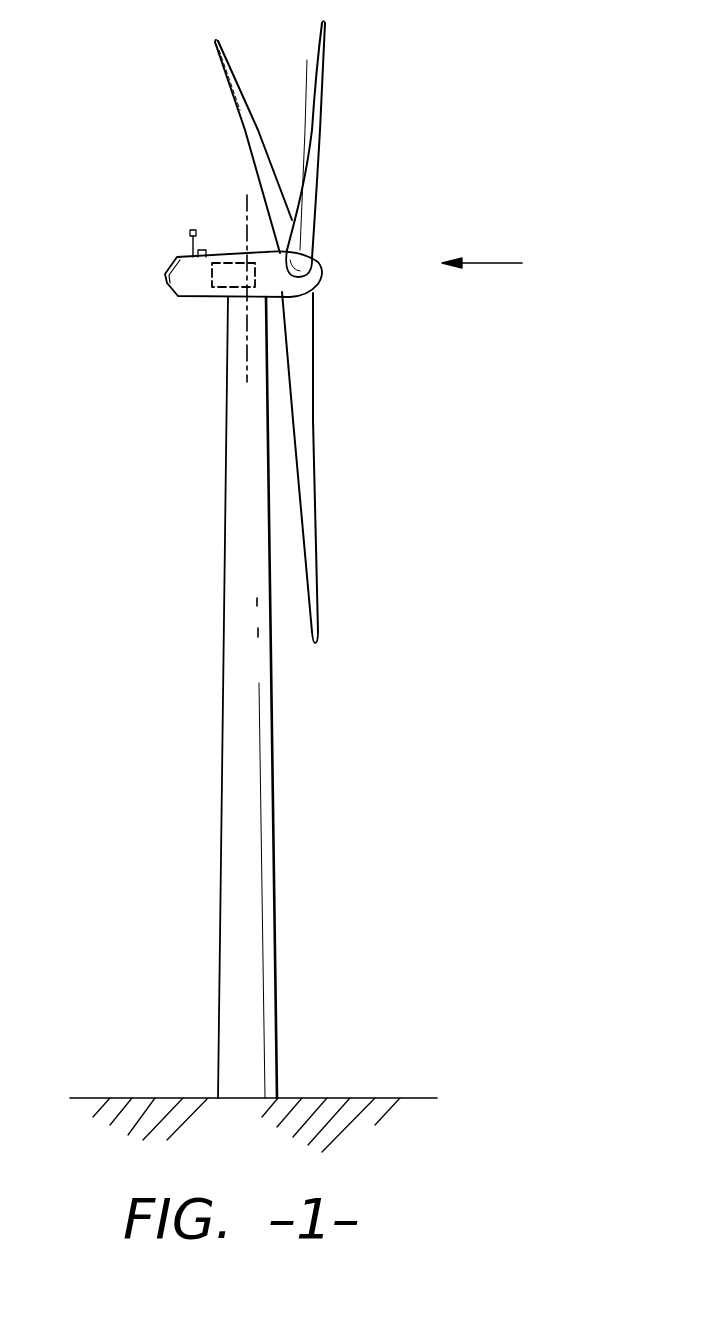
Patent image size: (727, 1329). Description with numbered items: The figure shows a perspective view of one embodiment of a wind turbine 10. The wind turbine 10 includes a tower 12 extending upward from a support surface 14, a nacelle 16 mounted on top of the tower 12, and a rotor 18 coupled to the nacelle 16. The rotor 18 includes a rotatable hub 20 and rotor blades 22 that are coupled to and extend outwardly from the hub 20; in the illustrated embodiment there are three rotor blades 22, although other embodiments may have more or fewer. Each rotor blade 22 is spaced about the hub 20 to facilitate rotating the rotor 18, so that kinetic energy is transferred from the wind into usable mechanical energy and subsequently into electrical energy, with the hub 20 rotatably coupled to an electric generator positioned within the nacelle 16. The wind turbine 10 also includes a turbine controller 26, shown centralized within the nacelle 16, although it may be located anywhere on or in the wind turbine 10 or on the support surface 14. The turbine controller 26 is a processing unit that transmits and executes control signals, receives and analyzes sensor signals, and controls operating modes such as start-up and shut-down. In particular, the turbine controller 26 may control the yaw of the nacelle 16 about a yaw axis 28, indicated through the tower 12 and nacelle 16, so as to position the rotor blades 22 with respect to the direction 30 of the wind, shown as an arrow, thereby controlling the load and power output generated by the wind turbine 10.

The wind turbine 10 is at (416, 101).
The tower 12 is at (235, 807).
The support surface 14 is at (150, 1098).
The nacelle 16 is at (205, 298).
The rotor 18 is at (326, 250).
The rotatable hub 20 is at (313, 278).
The rotor blade 22 is at (313, 63).
The turbine controller 26 is at (237, 262).
The yaw axis 28 is at (248, 362).
The direction of the wind 30 is at (495, 263).